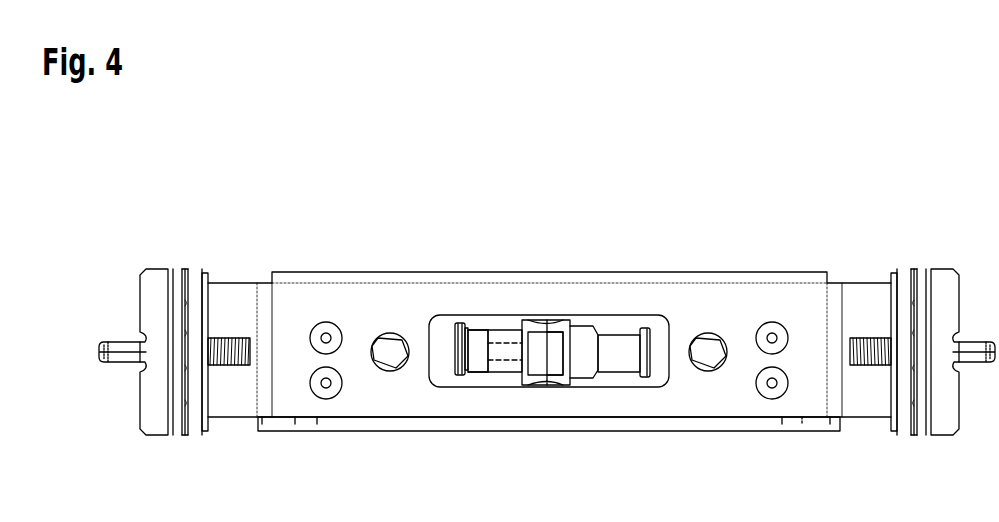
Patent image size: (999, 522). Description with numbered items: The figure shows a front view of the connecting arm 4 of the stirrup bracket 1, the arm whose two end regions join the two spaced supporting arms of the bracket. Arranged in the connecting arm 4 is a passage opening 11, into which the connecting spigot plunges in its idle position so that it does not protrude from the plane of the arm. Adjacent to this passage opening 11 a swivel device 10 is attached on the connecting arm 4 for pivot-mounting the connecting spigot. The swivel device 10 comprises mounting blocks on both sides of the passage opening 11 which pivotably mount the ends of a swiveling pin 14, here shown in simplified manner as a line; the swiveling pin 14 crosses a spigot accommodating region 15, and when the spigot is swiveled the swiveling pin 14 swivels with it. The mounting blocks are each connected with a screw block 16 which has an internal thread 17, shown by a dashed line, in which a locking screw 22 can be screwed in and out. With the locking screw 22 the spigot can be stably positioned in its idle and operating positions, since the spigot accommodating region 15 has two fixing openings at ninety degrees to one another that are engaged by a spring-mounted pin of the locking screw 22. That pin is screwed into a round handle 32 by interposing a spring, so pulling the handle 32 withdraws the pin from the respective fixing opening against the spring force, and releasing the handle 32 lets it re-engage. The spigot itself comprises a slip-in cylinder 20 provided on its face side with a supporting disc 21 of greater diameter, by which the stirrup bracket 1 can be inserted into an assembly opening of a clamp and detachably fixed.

The stirrup bracket 1 is at (867, 211).
The connecting arm 4 is at (703, 262).
The swivel device 10 is at (538, 388).
The passage opening 11 is at (447, 357).
The swiveling pin 14 is at (568, 356).
The spigot accommodating region 15 is at (560, 343).
The screw block 16 is at (495, 373).
The internal thread 17 is at (502, 343).
The slip-in cylinder 20 is at (618, 357).
The supporting disc 21 is at (642, 327).
The locking screw 22 is at (477, 343).
The round handle 32 is at (452, 337).